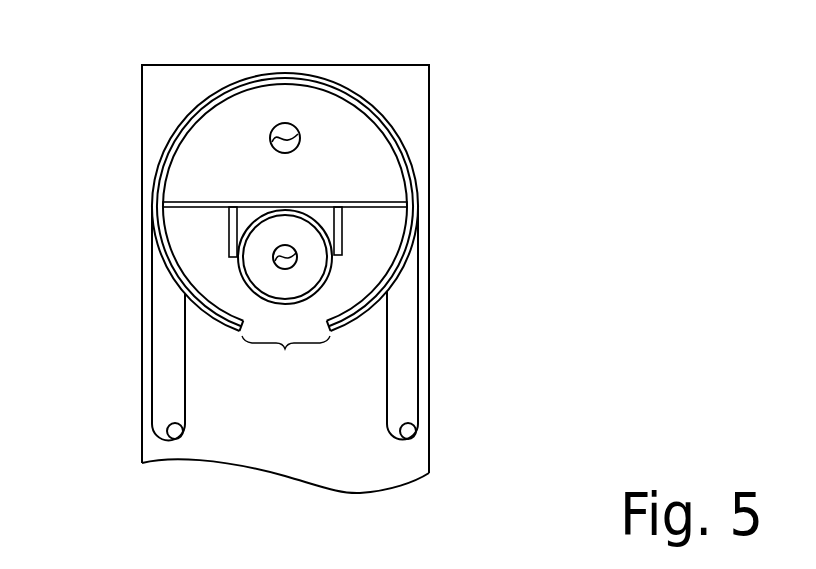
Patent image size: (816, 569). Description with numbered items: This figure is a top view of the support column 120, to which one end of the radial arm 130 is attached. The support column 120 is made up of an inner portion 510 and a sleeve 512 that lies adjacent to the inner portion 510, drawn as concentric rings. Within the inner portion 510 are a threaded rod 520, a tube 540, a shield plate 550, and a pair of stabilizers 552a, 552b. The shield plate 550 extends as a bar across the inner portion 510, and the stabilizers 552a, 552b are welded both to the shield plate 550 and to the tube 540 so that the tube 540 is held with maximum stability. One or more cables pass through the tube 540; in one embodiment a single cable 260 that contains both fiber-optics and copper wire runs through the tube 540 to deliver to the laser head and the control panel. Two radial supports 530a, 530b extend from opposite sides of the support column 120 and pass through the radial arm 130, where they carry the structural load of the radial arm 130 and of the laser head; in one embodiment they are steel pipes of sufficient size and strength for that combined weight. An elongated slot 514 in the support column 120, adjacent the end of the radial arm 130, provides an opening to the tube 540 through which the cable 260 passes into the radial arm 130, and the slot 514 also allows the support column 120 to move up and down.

The support column 120 is at (388, 100).
The radial arm 130 is at (142, 452).
The cable 260 is at (273, 258).
The inner portion 510 is at (403, 176).
The sleeve 512 is at (402, 149).
The elongated slot 514 is at (286, 360).
The threaded rod 520 is at (292, 124).
The radial support 530a is at (419, 368).
The radial support 530b is at (152, 363).
The tube 540 is at (325, 281).
The shield plate 550 is at (190, 201).
The stabilizer 552a is at (343, 253).
The stabilizer 552b is at (229, 240).